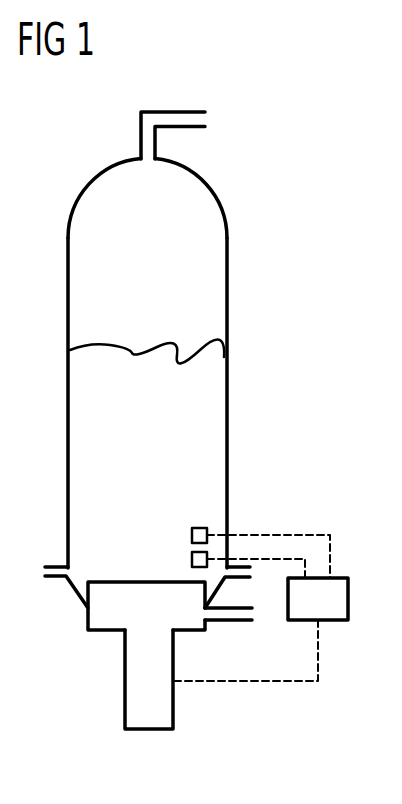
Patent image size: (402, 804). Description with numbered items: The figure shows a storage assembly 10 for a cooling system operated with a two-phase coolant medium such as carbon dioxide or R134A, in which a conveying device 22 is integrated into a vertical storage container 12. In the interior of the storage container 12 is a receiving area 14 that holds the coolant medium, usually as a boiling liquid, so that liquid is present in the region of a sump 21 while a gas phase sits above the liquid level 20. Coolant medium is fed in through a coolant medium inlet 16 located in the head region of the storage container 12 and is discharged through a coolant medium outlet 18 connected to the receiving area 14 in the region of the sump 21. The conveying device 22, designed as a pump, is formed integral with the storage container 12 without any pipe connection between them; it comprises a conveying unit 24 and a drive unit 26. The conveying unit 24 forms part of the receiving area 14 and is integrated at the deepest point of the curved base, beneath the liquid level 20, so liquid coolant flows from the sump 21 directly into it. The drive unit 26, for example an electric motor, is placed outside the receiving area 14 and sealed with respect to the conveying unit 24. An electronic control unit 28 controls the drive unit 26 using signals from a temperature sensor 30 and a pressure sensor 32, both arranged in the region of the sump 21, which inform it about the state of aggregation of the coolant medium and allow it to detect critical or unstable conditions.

The storage assembly 10 is at (262, 206).
The storage container 12 is at (228, 294).
The receiving area 14 is at (77, 253).
The coolant medium inlet 16 is at (187, 118).
The coolant medium outlet 18 is at (238, 618).
The liquid level 20 is at (143, 348).
The sump 21 is at (84, 573).
The conveying device 22 is at (86, 672).
The conveying unit 24 is at (113, 590).
The drive unit 26 is at (148, 722).
The electronic control unit 28 is at (338, 620).
The temperature sensor 30 is at (199, 527).
The pressure sensor 32 is at (191, 559).